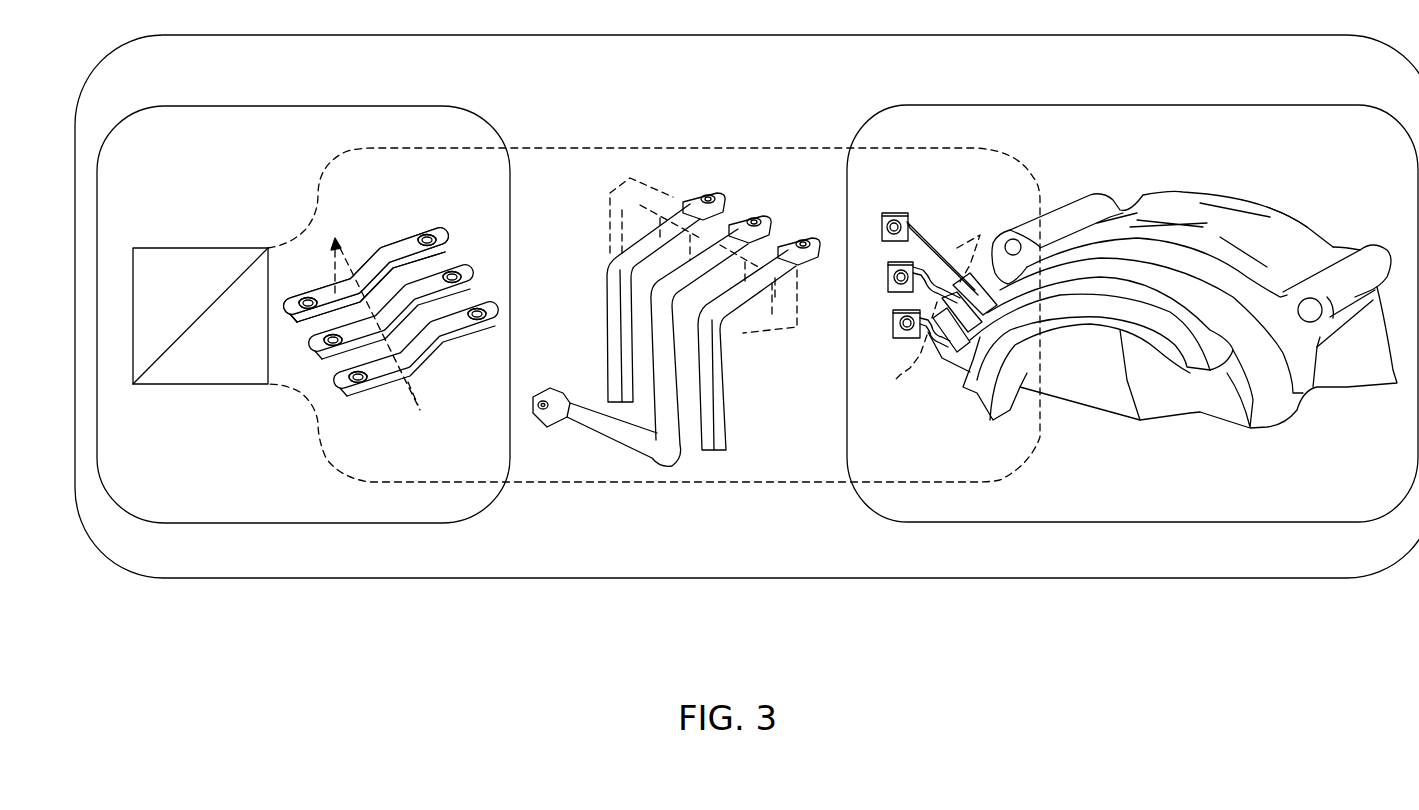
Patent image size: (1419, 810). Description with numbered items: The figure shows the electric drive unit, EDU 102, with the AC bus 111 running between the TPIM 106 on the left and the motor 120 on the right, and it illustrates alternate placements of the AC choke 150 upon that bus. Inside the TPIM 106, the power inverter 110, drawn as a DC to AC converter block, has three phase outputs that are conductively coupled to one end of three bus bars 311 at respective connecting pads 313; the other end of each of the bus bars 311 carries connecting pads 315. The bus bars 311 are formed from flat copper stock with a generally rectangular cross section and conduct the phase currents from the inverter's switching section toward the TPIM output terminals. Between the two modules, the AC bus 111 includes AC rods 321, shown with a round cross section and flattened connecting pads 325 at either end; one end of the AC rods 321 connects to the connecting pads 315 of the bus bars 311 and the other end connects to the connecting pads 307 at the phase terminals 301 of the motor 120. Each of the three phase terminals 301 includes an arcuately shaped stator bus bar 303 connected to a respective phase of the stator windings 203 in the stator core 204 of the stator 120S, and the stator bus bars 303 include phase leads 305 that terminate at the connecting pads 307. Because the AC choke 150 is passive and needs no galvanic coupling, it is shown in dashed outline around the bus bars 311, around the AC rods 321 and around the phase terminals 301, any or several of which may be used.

The EDU 102 is at (446, 34).
The TPIM 106 is at (256, 106).
The power inverter 110 is at (167, 248).
The AC bus 111 is at (524, 148).
The motor 120 is at (1090, 105).
The stator 120S is at (1236, 165).
The AC choke 150 is at (340, 255).
The stator windings 203 is at (973, 388).
The stator core 204 is at (1290, 222).
The phase terminals 301 is at (937, 274).
The stator bus bar 303 is at (1197, 347).
The phase leads 305 is at (918, 222).
The connecting pads 307 is at (892, 212).
The bus bars 311 is at (452, 394).
The connecting pads 313 is at (298, 297).
The connecting pads 315 is at (436, 228).
The AC rods 321 is at (573, 270).
The connecting pads 325 is at (703, 192).